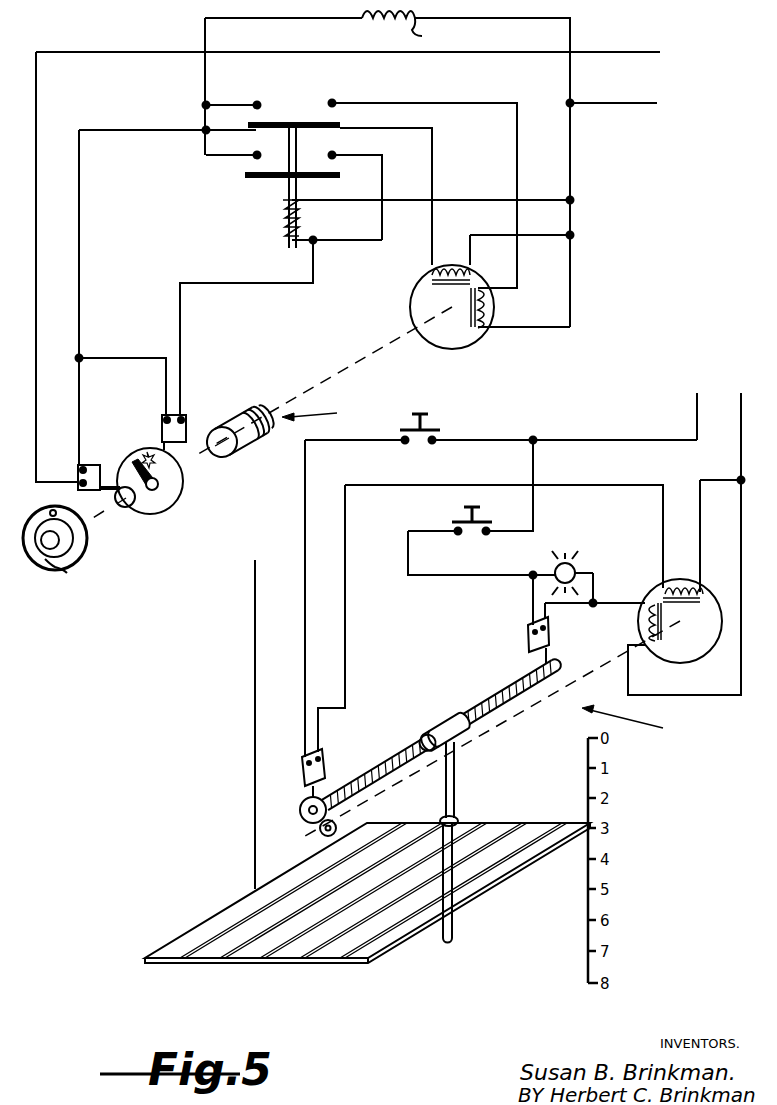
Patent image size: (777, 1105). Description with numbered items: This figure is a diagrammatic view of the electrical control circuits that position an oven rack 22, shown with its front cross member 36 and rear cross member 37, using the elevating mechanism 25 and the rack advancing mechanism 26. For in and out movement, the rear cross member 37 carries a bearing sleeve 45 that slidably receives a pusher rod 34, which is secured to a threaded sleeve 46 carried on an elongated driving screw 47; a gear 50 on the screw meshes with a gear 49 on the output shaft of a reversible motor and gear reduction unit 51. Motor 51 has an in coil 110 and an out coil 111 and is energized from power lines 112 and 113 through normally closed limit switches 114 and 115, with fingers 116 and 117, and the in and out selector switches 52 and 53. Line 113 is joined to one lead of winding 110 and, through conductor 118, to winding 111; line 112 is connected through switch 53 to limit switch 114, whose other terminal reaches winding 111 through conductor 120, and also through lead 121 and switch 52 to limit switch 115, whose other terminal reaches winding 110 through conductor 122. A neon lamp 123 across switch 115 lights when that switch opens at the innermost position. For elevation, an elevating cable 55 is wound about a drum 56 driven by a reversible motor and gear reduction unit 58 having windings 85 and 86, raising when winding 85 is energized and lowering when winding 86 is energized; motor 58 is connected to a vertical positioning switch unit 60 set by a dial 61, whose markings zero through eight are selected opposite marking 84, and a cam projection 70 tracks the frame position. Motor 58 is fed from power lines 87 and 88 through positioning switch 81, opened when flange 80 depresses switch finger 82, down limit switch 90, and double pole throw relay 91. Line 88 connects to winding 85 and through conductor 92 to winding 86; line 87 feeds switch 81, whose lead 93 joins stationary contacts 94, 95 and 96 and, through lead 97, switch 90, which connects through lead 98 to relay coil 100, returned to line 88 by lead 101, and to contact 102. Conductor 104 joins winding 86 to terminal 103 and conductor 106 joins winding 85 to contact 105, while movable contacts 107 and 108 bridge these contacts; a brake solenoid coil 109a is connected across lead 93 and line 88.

The rack 22 is at (380, 949).
The elevating mechanism 25 is at (309, 415).
The rack advancing mechanism 26 is at (634, 726).
The pusher rod 34 is at (456, 792).
The front cross member 36 is at (228, 963).
The rear cross member 37 is at (525, 822).
The bearing sleeve 45 is at (440, 820).
The threaded sleeve 46 is at (446, 730).
The driving screw 47 is at (398, 748).
The gear 49 is at (322, 836).
The gear 50 is at (310, 822).
The motor and gear reduction unit 51 is at (715, 590).
The in selector switch 52 is at (468, 510).
The out selector switch 53 is at (418, 410).
The elevating cable 55 is at (255, 672).
The drum 56 is at (256, 406).
The motor and gear reduction unit 58 is at (476, 336).
The vertical positioning switch unit 60 is at (174, 503).
The dial 61 is at (58, 570).
The cam projection 70 is at (147, 452).
The flange 80 is at (146, 516).
The positioning switch 81 is at (92, 463).
The switch finger 82 is at (110, 506).
The marking 84 is at (56, 503).
The winding 85 is at (490, 303).
The winding 86 is at (447, 265).
The power line 87 is at (37, 225).
The power line 88 is at (657, 103).
The down limit switch 90 is at (186, 430).
The double pole throw relay 91 is at (282, 226).
The conductor 92 is at (540, 237).
The lead 93 is at (80, 279).
The stationary contact 94 is at (256, 157).
The stationary contact 95 is at (258, 133).
The stationary contact 96 is at (257, 102).
The lead 97 is at (124, 360).
The lead 98 is at (181, 318).
The relay coil 100 is at (300, 218).
The lead 101 is at (486, 198).
The relay contact 102 is at (333, 158).
The terminal 103 is at (338, 131).
The conductor 104 is at (433, 150).
The contact 105 is at (334, 101).
The conductor 106 is at (518, 152).
The movable contact 107 is at (276, 178).
The movable contact 108 is at (300, 121).
The solenoid coil 109a is at (387, 169).
The in coil 110 is at (644, 626).
The out coil 111 is at (682, 582).
The power line 112 is at (305, 625).
The power line 113 is at (742, 400).
The out limit switch 114 is at (326, 756).
The in limit switch 115 is at (528, 634).
The finger 116 is at (540, 658).
The finger 117 is at (312, 799).
The conductor 118 is at (701, 522).
The conductor 120 is at (590, 485).
The lead 121 is at (534, 504).
The conductor 122 is at (622, 603).
The neon lamp 123 is at (571, 562).